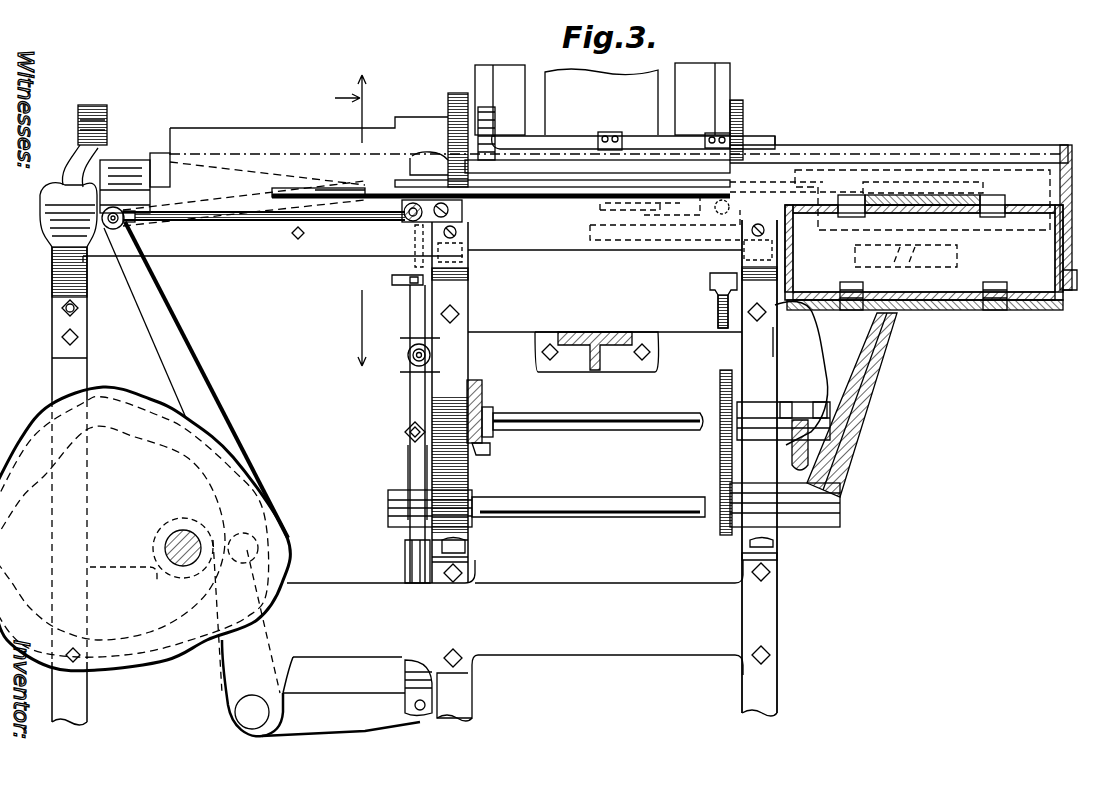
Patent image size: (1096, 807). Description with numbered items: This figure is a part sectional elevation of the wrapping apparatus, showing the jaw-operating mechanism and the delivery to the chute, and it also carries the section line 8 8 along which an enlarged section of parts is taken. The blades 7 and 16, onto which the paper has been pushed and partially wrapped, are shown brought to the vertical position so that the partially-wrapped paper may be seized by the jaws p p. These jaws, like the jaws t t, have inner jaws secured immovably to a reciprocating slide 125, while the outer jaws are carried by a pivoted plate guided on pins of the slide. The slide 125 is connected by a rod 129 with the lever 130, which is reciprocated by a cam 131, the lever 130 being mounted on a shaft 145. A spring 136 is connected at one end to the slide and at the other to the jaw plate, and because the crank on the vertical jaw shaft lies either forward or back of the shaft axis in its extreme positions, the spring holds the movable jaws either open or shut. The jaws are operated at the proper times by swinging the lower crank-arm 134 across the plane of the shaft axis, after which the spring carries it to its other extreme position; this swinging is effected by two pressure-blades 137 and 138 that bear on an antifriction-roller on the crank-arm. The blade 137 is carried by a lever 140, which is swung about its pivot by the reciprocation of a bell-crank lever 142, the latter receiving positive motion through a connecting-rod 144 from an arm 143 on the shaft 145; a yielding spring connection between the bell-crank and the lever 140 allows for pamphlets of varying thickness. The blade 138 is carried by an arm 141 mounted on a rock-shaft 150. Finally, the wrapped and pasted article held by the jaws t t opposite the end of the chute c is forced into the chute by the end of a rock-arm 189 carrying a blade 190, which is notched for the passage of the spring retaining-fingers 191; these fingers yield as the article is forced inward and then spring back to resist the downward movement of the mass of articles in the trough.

The blade 7 is at (152, 196).
The section line 8 8 is at (350, 222).
The blade 16 is at (163, 218).
The rod 129 is at (246, 222).
The jaws p is at (302, 192).
The reciprocating slide 125 is at (462, 218).
The spring 136 is at (548, 200).
The jaws t is at (622, 207).
The blade 190 is at (984, 244).
The spring retaining-fingers 191 is at (1000, 308).
The chute c is at (1052, 300).
The pressure-blade 137 is at (400, 284).
The crank-arm 134 is at (408, 318).
The lever 140 is at (409, 355).
The pressure-blade 138 is at (710, 283).
The rock-arm 189 is at (882, 358).
The lever 130 is at (208, 388).
The cam 131 is at (160, 582).
The bell-crank lever 142 is at (412, 463).
The arm 141 is at (718, 458).
The rock-shaft 150 is at (606, 518).
The connecting-rod 144 is at (410, 560).
The arm 143 is at (300, 714).
The shaft 145 is at (243, 708).